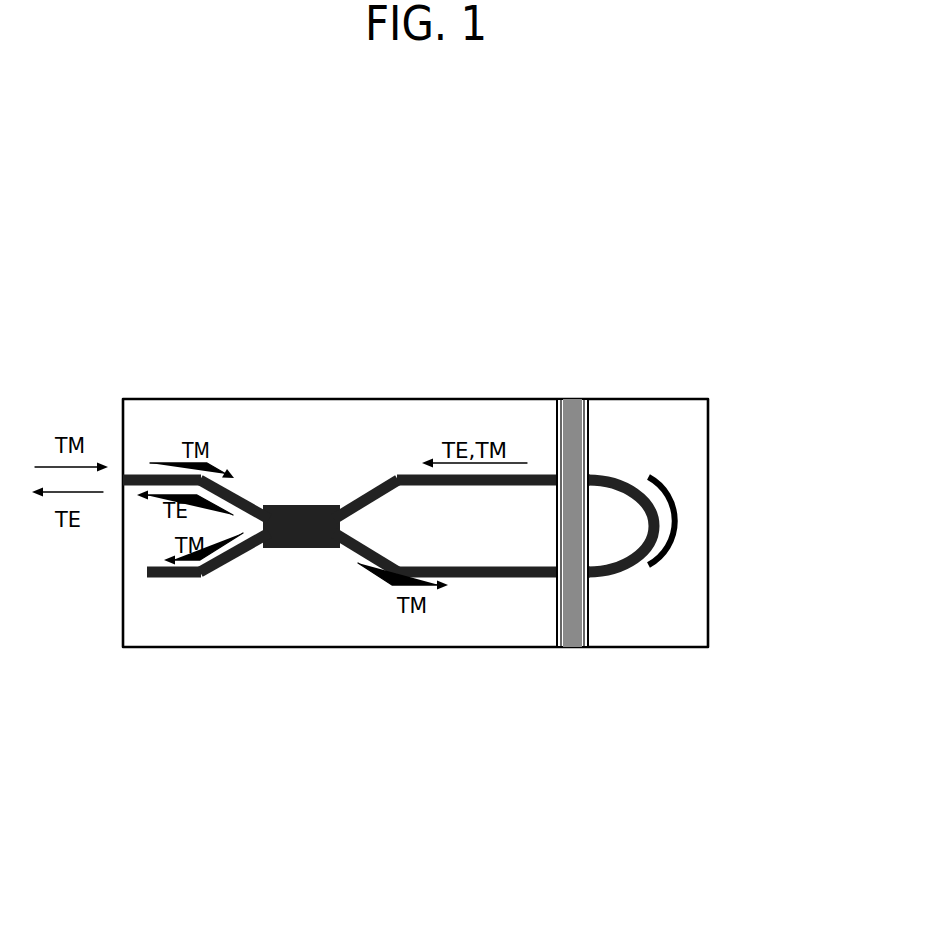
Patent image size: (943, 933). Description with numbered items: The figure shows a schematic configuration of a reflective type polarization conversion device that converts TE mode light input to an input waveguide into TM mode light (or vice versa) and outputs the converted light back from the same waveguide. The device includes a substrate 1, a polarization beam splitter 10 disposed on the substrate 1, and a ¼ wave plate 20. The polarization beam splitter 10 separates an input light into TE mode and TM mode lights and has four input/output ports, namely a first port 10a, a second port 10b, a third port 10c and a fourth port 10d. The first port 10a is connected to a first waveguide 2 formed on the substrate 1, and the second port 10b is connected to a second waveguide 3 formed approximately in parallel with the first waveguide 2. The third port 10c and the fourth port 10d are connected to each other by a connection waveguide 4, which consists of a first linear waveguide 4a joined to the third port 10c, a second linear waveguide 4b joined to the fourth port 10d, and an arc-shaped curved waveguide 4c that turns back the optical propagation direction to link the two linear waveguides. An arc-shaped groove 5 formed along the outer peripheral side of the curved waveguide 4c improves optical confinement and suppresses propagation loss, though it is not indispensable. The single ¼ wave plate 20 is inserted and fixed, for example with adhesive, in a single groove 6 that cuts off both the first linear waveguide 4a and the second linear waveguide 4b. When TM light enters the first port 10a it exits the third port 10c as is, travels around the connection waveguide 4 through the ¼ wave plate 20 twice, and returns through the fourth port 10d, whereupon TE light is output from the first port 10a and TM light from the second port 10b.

The substrate 1 is at (648, 398).
The first waveguide 2 is at (138, 474).
The second waveguide 3 is at (168, 578).
The connection waveguide 4 is at (532, 651).
The first linear waveguide 4a is at (450, 578).
The second linear waveguide 4b is at (515, 485).
The curved waveguide 4c is at (621, 601).
The arc-shaped groove 5 is at (680, 513).
The groove 6 is at (556, 438).
The polarization beam splitter 10 is at (299, 468).
The first port 10a is at (249, 498).
The second port 10b is at (255, 550).
The third port 10c is at (345, 550).
The fourth port 10d is at (356, 498).
The ¼ wave plate 20 is at (567, 398).